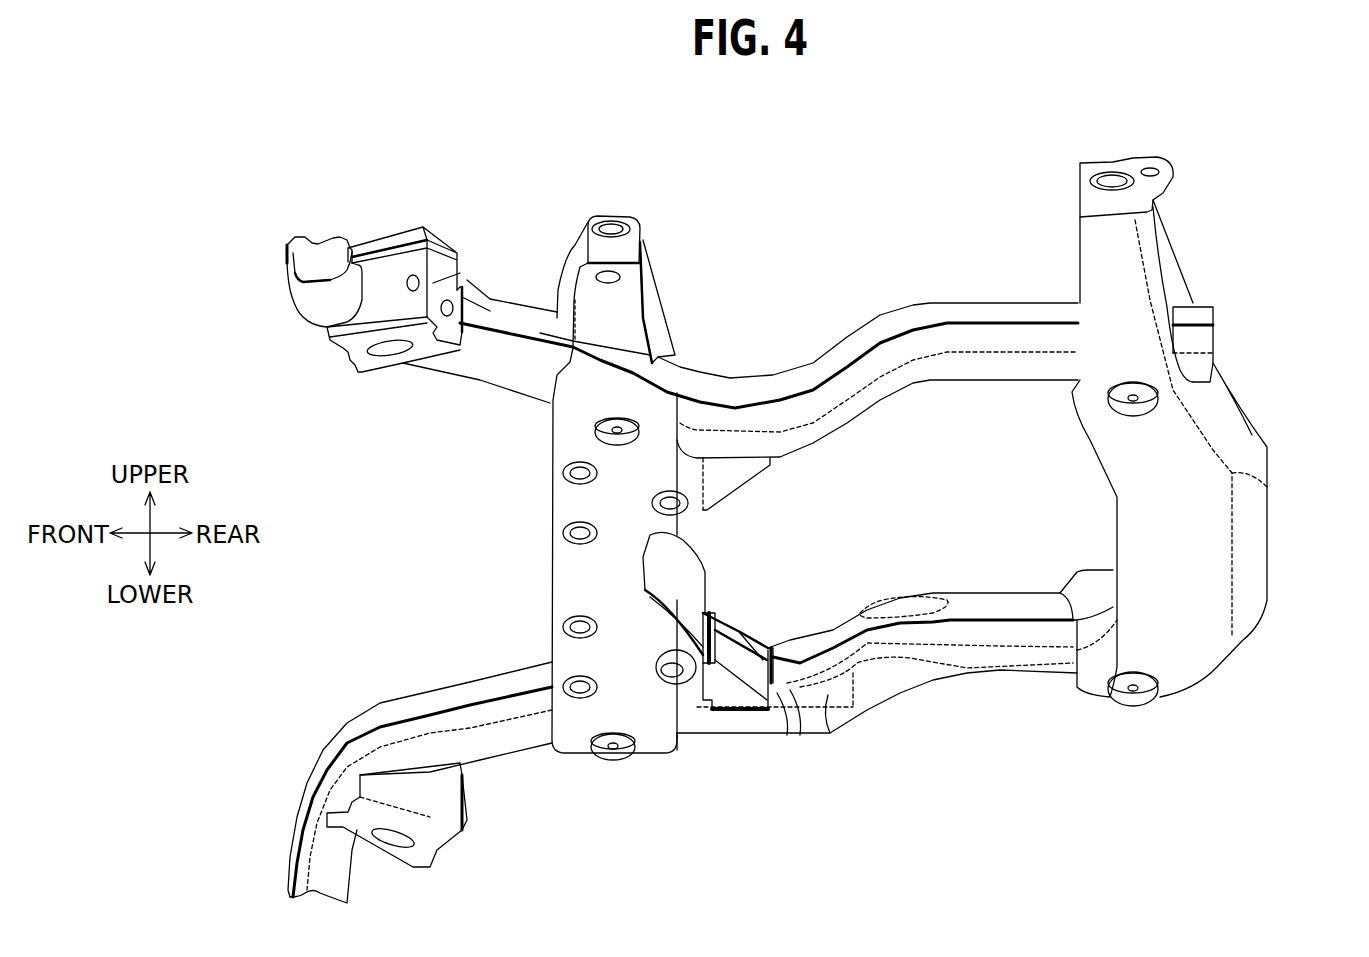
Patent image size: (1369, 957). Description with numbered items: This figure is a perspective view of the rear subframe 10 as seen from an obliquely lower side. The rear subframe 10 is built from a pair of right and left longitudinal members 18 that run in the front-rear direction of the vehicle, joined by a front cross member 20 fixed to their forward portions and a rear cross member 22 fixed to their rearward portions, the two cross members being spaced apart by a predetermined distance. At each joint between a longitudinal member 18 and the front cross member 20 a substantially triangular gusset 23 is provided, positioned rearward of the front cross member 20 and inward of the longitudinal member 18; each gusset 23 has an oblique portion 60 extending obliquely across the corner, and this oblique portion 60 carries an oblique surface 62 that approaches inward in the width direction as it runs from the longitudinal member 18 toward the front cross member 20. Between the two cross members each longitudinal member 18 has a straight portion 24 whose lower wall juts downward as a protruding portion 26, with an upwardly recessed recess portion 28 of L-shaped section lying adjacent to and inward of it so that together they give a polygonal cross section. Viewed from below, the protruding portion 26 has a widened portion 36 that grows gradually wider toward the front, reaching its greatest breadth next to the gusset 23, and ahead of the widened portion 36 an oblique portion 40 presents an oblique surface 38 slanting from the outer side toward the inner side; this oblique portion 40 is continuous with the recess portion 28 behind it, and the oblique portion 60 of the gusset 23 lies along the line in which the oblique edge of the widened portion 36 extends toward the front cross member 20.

The rear subframe 10 is at (839, 175).
The longitudinal member 18 is at (1001, 281).
The front cross member 20 is at (530, 555).
The rear cross member 22 is at (1292, 546).
The gusset 23 is at (757, 497).
The straight portion 24 is at (880, 316).
The protruding portion 26 is at (973, 672).
The recess portion 28 is at (910, 660).
The widened portion 36 is at (830, 717).
The oblique surface 38 is at (787, 694).
The oblique portion 40 is at (857, 641).
The oblique portion 60 is at (773, 652).
The oblique surface 62 is at (770, 737).